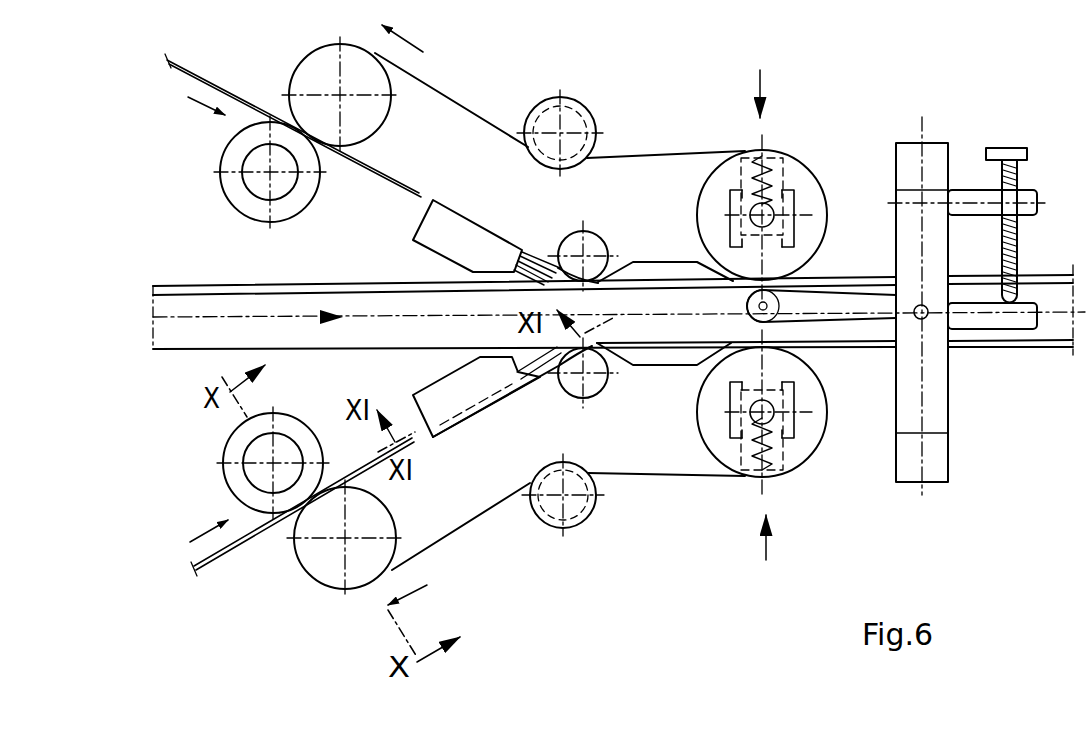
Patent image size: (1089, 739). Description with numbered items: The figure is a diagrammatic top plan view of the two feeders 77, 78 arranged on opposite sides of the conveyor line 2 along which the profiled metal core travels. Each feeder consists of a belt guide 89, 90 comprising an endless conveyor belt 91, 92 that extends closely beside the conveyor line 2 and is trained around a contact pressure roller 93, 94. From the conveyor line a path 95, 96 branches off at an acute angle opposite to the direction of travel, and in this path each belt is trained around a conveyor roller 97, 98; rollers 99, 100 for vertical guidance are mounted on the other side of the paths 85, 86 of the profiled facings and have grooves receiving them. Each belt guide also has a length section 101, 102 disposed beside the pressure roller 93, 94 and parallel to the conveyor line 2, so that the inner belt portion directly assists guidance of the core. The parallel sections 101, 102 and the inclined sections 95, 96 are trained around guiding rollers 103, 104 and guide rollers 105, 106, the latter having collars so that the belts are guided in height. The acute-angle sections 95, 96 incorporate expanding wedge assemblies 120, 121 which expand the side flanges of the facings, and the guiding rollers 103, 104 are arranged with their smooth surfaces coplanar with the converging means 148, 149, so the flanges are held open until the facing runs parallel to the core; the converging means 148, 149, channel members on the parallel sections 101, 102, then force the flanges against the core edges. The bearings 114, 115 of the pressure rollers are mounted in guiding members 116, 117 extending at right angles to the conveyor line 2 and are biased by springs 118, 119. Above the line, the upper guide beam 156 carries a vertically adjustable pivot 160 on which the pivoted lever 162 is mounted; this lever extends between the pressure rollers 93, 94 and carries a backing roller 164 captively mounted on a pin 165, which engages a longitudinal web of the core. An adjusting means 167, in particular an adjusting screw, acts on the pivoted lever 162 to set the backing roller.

The conveyor line 2 is at (203, 338).
The feeder 77 is at (633, 174).
The feeder 78 is at (641, 456).
The path 85 is at (210, 83).
The path 86 is at (240, 548).
The belt guide 89 is at (468, 133).
The belt guide 90 is at (461, 508).
The endless conveyor belt 91 is at (432, 91).
The endless conveyor belt 92 is at (493, 508).
The contact pressure roller 93 is at (785, 162).
The contact pressure roller 94 is at (798, 462).
The path 95 is at (492, 142).
The path 96 is at (433, 532).
The conveyor roller 97 is at (313, 63).
The conveyor roller 98 is at (318, 570).
The roller for vertical guidance 99 is at (282, 188).
The roller for vertical guidance 100 is at (283, 447).
The length section 101 is at (672, 166).
The length section 102 is at (683, 462).
The guiding roller 103 is at (568, 244).
The guiding roller 104 is at (590, 384).
The guide roller 105 is at (568, 120).
The guide roller 106 is at (573, 513).
The bearing 114 is at (770, 207).
The bearing 115 is at (770, 407).
The guiding member 116 is at (735, 207).
The guiding member 117 is at (740, 420).
The spring 118 is at (770, 177).
The spring 119 is at (763, 437).
The expanding wedge assembly 120 is at (424, 228).
The expanding wedge assembly 121 is at (450, 378).
The converging means 148 is at (633, 266).
The converging means 149 is at (642, 357).
The upper guide beam 156 is at (938, 402).
The pivot 160 is at (926, 318).
The pivoted lever 162 is at (865, 305).
The backing roller 164 is at (768, 312).
The pin 165 is at (768, 304).
The adjusting means 167 is at (1020, 170).